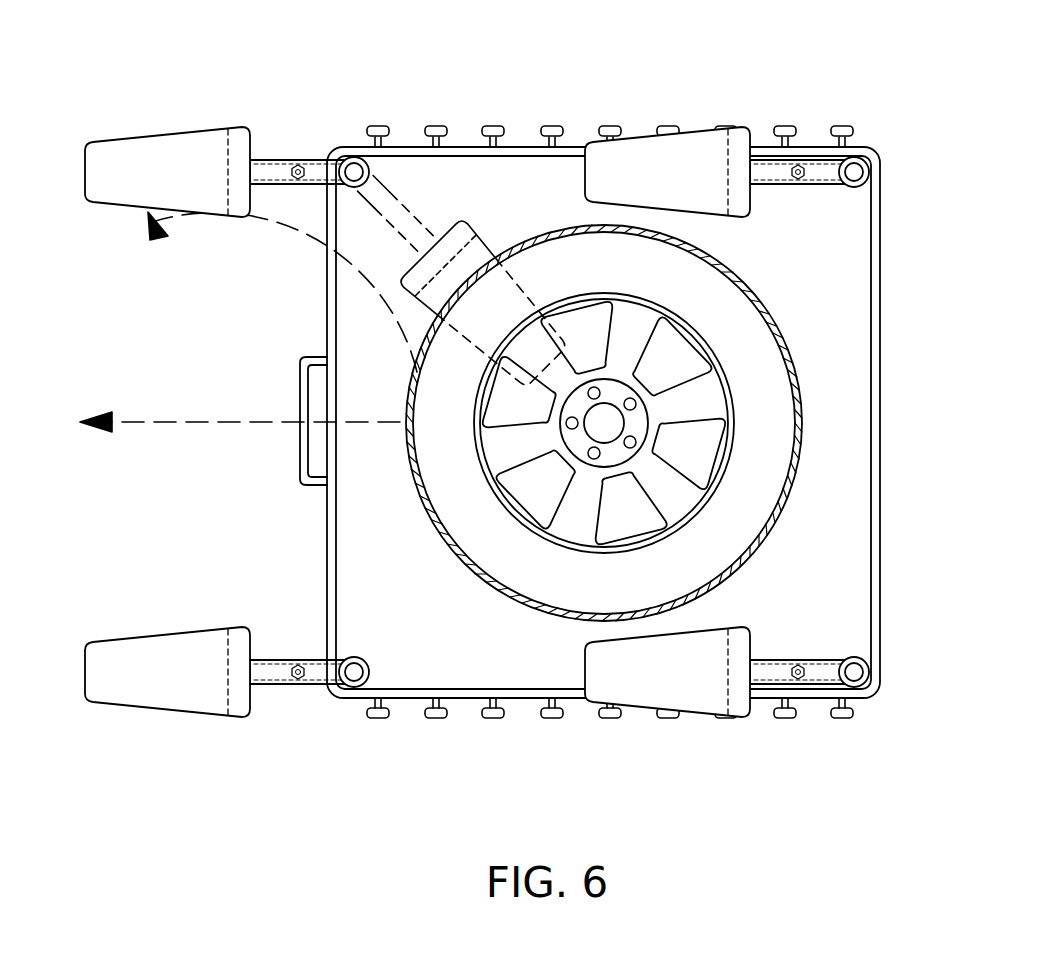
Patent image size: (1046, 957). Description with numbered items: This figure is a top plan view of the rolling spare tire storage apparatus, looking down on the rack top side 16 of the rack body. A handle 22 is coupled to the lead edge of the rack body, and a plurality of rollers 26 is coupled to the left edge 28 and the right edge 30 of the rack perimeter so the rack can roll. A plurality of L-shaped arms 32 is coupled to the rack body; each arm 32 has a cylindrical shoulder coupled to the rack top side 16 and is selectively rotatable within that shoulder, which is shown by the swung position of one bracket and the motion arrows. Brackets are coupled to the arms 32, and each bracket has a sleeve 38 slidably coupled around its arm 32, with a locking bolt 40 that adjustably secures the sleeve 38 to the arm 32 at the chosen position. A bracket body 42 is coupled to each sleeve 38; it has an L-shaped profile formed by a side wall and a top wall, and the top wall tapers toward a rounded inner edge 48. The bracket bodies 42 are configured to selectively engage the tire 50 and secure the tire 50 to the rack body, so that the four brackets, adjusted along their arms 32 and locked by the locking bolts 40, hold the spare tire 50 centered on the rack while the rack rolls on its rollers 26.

The rack top side 16 is at (842, 545).
The handle 22 is at (300, 477).
The rollers 26 is at (493, 716).
The left edge 28 is at (402, 146).
The right edge 30 is at (762, 165).
The arm 32 is at (870, 168).
The sleeve 38 is at (767, 668).
The locking bolt 40 is at (803, 674).
The bracket body 42 is at (688, 172).
The rounded inner edge 48 is at (85, 163).
The tire 50 is at (778, 398).